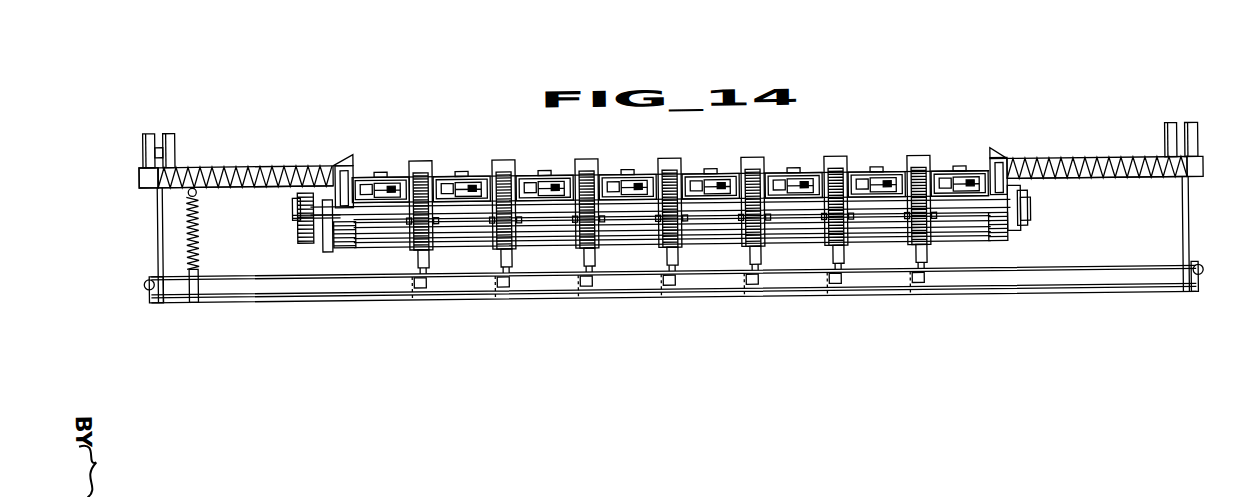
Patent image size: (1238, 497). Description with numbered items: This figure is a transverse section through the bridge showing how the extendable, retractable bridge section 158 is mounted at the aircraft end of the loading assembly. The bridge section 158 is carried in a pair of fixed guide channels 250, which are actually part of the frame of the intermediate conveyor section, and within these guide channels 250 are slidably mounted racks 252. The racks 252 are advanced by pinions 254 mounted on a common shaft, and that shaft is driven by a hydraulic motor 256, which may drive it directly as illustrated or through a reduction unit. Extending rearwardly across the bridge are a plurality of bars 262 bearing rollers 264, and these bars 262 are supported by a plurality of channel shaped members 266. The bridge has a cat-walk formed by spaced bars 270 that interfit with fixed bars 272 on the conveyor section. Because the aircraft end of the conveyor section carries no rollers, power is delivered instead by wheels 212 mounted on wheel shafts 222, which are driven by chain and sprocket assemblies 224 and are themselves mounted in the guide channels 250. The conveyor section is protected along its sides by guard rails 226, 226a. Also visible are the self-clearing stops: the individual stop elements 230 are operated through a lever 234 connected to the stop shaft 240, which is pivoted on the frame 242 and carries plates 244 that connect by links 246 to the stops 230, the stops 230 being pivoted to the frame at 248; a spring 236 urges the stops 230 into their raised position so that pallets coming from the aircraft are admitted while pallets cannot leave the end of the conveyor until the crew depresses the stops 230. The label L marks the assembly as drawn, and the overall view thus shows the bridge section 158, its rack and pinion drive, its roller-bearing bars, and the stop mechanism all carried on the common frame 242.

The assembly L is at (137, 170).
The bridge section 158 is at (940, 174).
The wheels 212 is at (507, 243).
The wheel shafts 222 is at (481, 215).
The chain and sprocket assemblies 224 is at (297, 203).
The guard rail 226 is at (170, 134).
The guard rail 226a is at (1195, 134).
The stop elements 230 is at (502, 164).
The lever 234 is at (197, 273).
The spring 236 is at (198, 226).
The stop shaft 240 is at (733, 290).
The frame 242 is at (158, 241).
The plates 244 is at (437, 307).
The links 246 is at (643, 263).
The pivot 248 is at (688, 216).
The guide channels 250 is at (330, 189).
The racks 252 is at (354, 166).
The pinions 254 is at (345, 255).
The hydraulic motor 256 is at (307, 252).
The bars 262 is at (523, 181).
The rollers 264 is at (462, 176).
The channel shaped members 266 is at (400, 180).
The spaced bars 270 is at (247, 168).
The fixed bars 272 is at (177, 188).